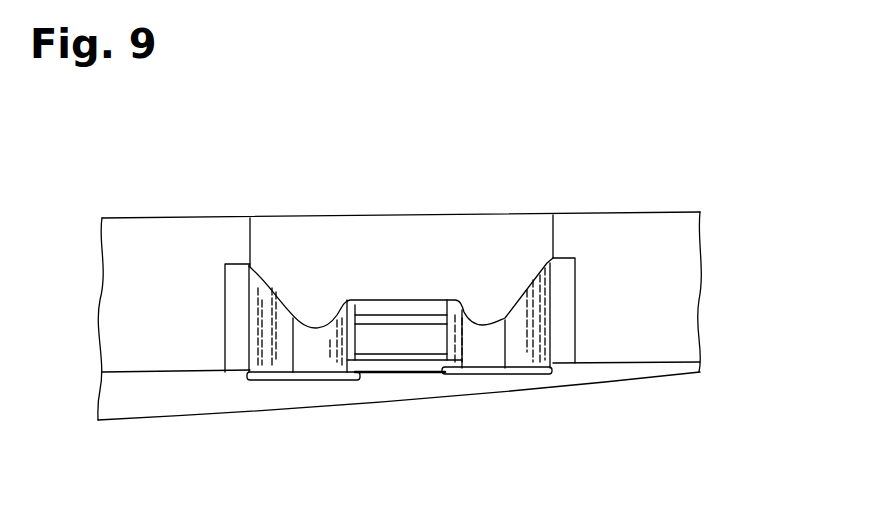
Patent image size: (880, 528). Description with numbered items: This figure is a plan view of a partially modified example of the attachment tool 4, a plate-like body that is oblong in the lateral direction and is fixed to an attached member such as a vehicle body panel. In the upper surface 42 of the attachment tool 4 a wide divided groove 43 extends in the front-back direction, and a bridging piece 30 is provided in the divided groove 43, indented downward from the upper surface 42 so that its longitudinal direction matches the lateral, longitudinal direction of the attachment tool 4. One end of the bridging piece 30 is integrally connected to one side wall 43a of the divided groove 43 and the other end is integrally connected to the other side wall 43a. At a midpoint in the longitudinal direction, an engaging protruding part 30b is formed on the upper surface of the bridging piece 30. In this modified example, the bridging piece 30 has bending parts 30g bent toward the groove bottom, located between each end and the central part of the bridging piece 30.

The attachment tool 4 is at (670, 323).
The upper surface 42 is at (683, 265).
The divided groove 43 is at (403, 233).
The side wall 43a is at (258, 238).
The bridging piece 30 is at (317, 360).
The bending part 30g is at (302, 352).
The engaging protruding part 30b is at (405, 340).